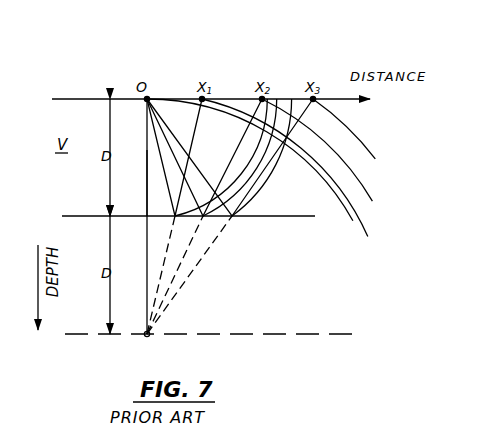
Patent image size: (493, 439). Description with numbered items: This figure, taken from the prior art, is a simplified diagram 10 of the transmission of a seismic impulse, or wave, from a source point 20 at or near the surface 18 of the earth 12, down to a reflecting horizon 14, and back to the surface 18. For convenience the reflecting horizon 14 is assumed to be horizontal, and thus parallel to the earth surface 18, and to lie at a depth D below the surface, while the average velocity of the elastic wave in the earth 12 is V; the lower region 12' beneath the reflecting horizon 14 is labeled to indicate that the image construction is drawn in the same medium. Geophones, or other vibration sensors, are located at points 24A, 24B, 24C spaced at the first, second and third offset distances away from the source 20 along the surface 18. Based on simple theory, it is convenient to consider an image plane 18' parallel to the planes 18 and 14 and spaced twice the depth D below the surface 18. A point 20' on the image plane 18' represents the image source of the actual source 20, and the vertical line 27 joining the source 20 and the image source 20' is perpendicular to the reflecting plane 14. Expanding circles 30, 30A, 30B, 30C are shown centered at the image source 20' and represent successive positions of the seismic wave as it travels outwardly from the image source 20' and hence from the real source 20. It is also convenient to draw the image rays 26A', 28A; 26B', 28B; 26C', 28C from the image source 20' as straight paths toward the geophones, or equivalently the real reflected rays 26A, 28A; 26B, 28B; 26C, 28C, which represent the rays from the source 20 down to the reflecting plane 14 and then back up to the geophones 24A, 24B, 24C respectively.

The simplified diagram 10 is at (338, 77).
The earth 12 is at (64, 190).
The image layer below reflector 12' is at (85, 295).
The reflecting horizon 14 is at (245, 219).
The surface of the earth 18 is at (211, 82).
The image plane 18' is at (208, 319).
The source point 20 is at (130, 75).
The image source 20' is at (166, 345).
The geophone point 24A is at (200, 97).
The geophone point 24B is at (259, 97).
The geophone point 24C is at (309, 95).
The real reflected ray 26A is at (174, 157).
The real reflected ray 26B is at (218, 157).
The real reflected ray 26C is at (230, 157).
The image ray 26A' is at (201, 275).
The image ray 26B' is at (195, 275).
The image ray 26C' is at (189, 275).
The vertical line through source 27 is at (146, 198).
The ray 28A is at (188, 160).
The ray 28B is at (222, 178).
The ray 28C is at (283, 147).
The expanding circle 30 is at (343, 218).
The expanding circle 30A is at (365, 229).
The expanding circle 30B is at (366, 195).
The expanding circle 30C is at (377, 160).